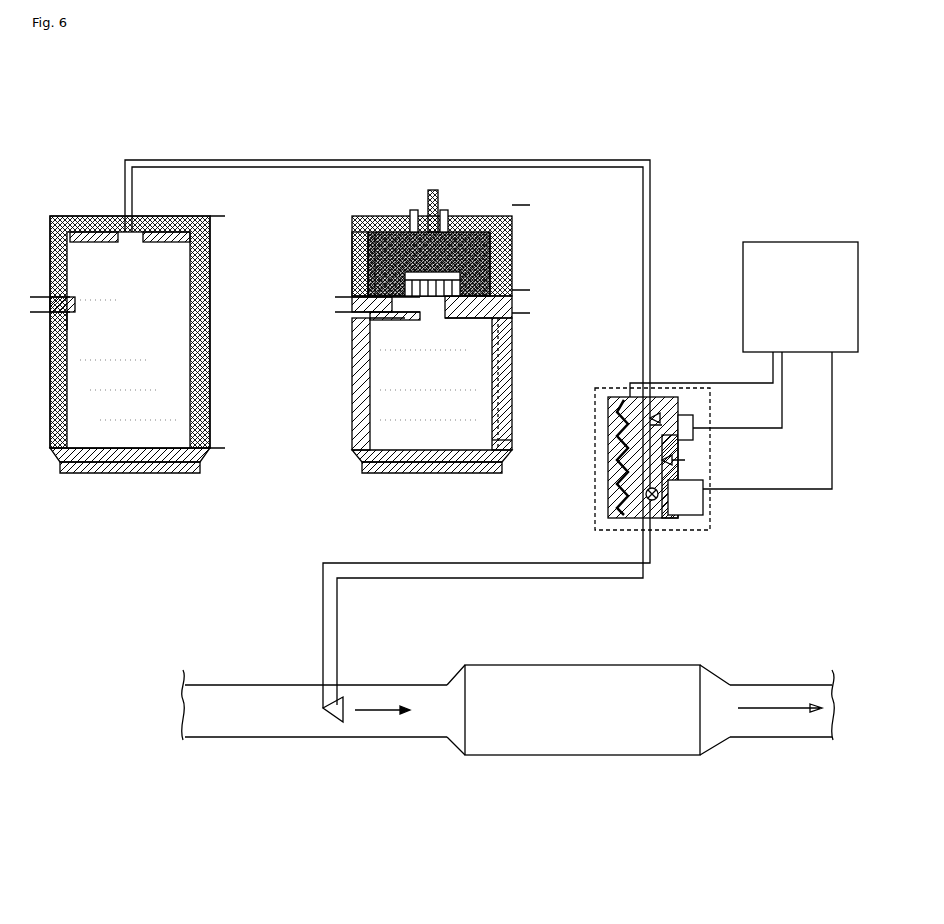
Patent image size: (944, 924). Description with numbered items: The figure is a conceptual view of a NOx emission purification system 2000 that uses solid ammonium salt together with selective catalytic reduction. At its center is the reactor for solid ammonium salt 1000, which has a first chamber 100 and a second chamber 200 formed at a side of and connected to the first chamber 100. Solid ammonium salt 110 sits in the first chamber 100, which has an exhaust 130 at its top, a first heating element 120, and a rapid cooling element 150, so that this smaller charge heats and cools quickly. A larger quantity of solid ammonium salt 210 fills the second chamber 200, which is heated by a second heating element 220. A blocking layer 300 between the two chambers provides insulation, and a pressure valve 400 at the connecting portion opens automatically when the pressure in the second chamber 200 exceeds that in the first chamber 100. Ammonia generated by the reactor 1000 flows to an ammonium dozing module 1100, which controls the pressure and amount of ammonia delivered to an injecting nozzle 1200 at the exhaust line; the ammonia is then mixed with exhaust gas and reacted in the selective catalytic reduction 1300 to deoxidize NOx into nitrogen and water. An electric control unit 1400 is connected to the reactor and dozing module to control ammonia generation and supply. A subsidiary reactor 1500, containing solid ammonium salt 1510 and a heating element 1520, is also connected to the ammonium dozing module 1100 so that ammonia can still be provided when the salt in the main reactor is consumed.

The NOx emission purification system 2000 is at (762, 104).
The reactor for solid ammonium salt 1000 is at (362, 190).
The first chamber 100 is at (352, 228).
The solid ammonium salt 110 is at (356, 278).
The first heating element 120 is at (513, 240).
The exhaust 130 is at (442, 200).
The rapid cooling element 150 is at (390, 228).
The pressure valve 400 is at (480, 282).
The blocking layer 300 is at (500, 306).
The second chamber 200 is at (352, 358).
The solid ammonium salt 210 is at (380, 398).
The second heating element 220 is at (505, 438).
The subsidiary reactor 1500 is at (86, 207).
The solid ammonium salt 1510 is at (200, 405).
The heating element 1520 is at (212, 230).
The electric control unit 1400 is at (800, 242).
The ammonium dozing module 1100 is at (590, 485).
The injecting nozzle 1200 is at (325, 740).
The selective catalytic reduction 1300 is at (600, 680).